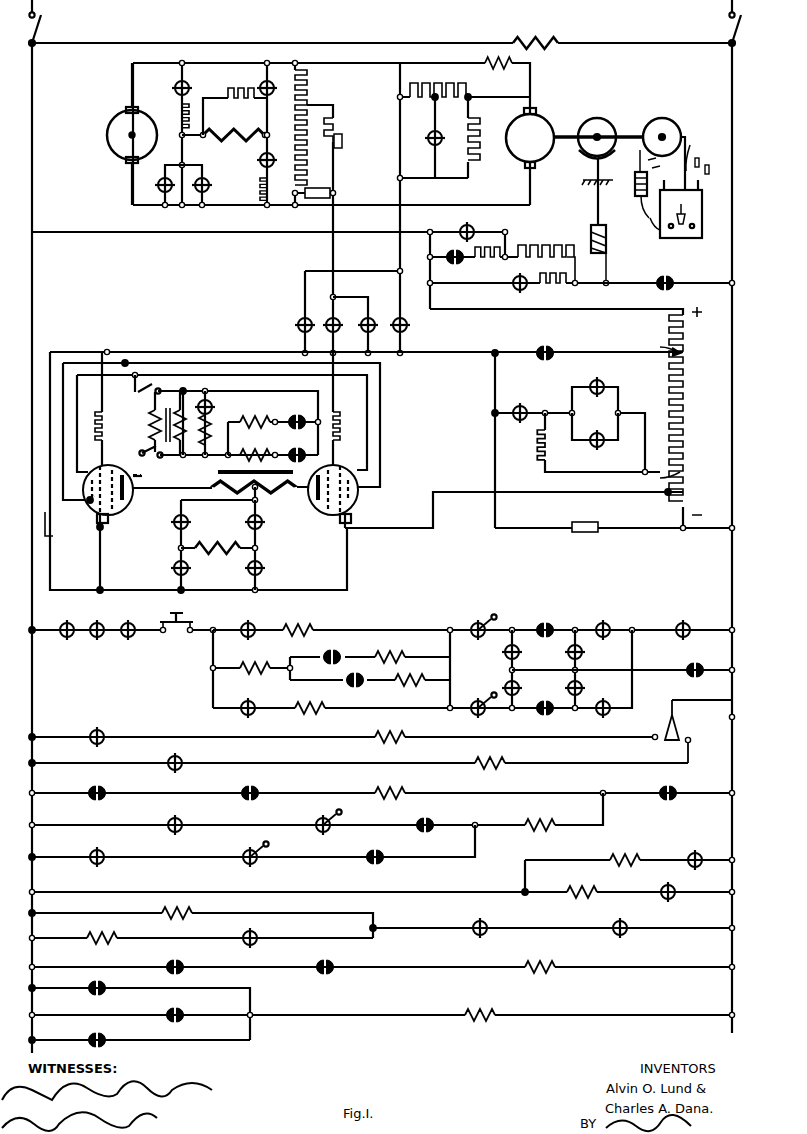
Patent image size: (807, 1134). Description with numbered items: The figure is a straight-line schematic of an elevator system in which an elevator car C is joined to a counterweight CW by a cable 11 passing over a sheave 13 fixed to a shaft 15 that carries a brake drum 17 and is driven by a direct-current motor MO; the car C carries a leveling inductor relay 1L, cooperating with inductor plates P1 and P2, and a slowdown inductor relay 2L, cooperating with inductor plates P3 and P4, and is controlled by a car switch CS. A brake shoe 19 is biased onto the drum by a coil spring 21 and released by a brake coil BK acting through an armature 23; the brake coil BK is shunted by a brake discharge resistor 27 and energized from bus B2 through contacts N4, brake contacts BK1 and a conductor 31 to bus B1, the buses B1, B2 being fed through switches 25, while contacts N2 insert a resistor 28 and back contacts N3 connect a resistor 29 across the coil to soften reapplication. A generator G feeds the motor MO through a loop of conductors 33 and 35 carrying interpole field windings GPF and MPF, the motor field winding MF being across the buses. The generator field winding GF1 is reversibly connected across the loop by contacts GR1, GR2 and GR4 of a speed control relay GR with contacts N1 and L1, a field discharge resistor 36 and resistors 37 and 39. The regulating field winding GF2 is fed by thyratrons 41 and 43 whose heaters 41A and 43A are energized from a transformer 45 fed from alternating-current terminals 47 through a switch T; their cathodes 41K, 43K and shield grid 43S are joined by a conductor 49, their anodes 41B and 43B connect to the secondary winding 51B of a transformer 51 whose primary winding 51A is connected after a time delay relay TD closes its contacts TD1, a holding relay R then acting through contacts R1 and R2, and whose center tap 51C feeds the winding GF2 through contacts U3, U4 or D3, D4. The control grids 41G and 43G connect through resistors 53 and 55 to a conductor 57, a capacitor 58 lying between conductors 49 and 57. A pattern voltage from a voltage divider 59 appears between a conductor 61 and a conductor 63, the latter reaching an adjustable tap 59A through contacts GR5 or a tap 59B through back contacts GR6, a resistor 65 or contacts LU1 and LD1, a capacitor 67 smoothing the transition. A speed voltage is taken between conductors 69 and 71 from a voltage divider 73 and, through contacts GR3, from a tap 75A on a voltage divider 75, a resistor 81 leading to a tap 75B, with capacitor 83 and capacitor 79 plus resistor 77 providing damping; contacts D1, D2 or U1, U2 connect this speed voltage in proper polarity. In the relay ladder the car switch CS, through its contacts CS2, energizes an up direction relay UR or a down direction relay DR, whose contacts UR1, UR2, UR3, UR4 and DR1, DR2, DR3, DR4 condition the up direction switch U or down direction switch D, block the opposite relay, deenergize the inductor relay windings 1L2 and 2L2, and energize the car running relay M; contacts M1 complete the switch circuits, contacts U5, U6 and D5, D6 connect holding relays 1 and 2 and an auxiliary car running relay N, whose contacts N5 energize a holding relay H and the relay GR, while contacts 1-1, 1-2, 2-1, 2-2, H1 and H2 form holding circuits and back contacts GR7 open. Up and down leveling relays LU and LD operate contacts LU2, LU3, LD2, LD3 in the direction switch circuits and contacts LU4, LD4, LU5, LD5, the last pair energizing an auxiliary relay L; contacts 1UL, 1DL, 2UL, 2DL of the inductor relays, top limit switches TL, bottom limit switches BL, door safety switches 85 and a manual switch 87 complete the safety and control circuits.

The switches 25 is at (44, 28).
The bus B1 is at (32, 137).
The bus B2 is at (732, 149).
The conductor 31 is at (245, 233).
The conductor 33 is at (380, 64).
The conductor 35 is at (376, 196).
The field discharge resistor 36 is at (224, 93).
The resistor 37 is at (178, 116).
The resistor 39 is at (263, 196).
The voltage divider 73 is at (307, 88).
The resistor 77 is at (342, 128).
The capacitor 79 is at (314, 200).
The capacitor 83 is at (400, 148).
The voltage divider 75 is at (465, 82).
The adjustable tap 75A is at (432, 137).
The tap 75B is at (483, 105).
The resistor 81 is at (483, 137).
The motor field winding MF is at (552, 28).
The generator interpole field winding GPF is at (483, 59).
The motor interpole field winding MPF is at (521, 74).
The generator G is at (122, 156).
The direct-current elevator motor MO is at (540, 122).
The shaft 15 is at (630, 134).
The brake drum 17 is at (603, 110).
The sheave 13 is at (678, 112).
The rope or cable 11 is at (697, 144).
The brake shoe 19 is at (582, 156).
The coil spring 21 is at (580, 170).
The magnetic armature 23 is at (608, 228).
The brake coil BK is at (598, 256).
The brake contacts BK1 is at (464, 228).
The brake discharge resistor 27 is at (554, 250).
The resistor 28 is at (553, 289).
The resistor 29 is at (487, 247).
The contacts of auxiliary car running relay N2 is at (472, 252).
The back contacts of auxiliary car running relay N3 is at (580, 289).
The contacts of auxiliary car running relay N4 is at (672, 280).
The voltage divider 59 is at (686, 386).
The adjustable tap 59A is at (649, 344).
The adjustable tap 59B is at (652, 480).
The conductor 61 is at (470, 492).
The conductor 63 is at (471, 353).
The resistor 65 is at (545, 446).
The capacitor 67 is at (572, 532).
The conductor 69 is at (336, 271).
The conductor 71 is at (398, 244).
The conductor 57 is at (204, 337).
The capacitor 58 is at (60, 530).
The resistor 53 is at (98, 415).
The resistor 55 is at (342, 416).
The transformer 45 is at (156, 398).
The terminals 47 is at (157, 425).
The grid-controlled rectifier tube 41 is at (122, 490).
The heater 41A is at (78, 500).
The anode 41B is at (135, 498).
The control grid 41G is at (93, 457).
The cathode 41K is at (114, 552).
The grid-controlled rectifier tube 43 is at (352, 516).
The heater 43A is at (382, 490).
The anode 43B is at (312, 524).
The control grid 43G is at (337, 470).
The cathode 43K is at (348, 536).
The shield grid 43S is at (112, 514).
The conductor 49 is at (328, 588).
The transformer 51 is at (230, 472).
The primary winding 51A is at (270, 450).
The secondary winding 51B is at (259, 491).
The center tap 51C is at (250, 502).
The door safety switches 85 is at (120, 622).
The manually operable switch 87 is at (184, 634).
The up relay coil U1 is at (300, 316).
The contacts of down direction switch D1 is at (338, 308).
The up relay coil U2 is at (372, 314).
The contacts of down direction switch D2 is at (406, 325).
The contacts of up direction switch U3 is at (176, 523).
The contacts of down direction switch D3 is at (262, 520).
The contacts of down direction switch D4 is at (176, 568).
The contacts of up direction switch U4 is at (262, 566).
The generator field winding GF1 is at (262, 122).
The generator field winding GF2 is at (230, 544).
The contacts of speed control relay GR1 is at (176, 90).
The contacts of speed control relay GR2 is at (264, 82).
The front contacts of speed control relay GR3 is at (423, 137).
The contacts of speed control relay GR4 is at (258, 155).
The front contacts of speed control relay GR5 is at (522, 346).
The back contacts of speed control relay GR6 is at (505, 408).
The back contacts of speed control relay GR7 is at (256, 934).
The speed control relay GR is at (566, 812).
The contacts of auxiliary car running relay N1 is at (160, 183).
The back contacts of auxiliary relay L1 is at (210, 186).
The auxiliary car running relay N is at (254, 662).
The contacts of auxiliary car running relay N5 is at (674, 792).
The back contacts of holding relay R1 is at (206, 423).
The holding relay R is at (250, 404).
The contacts of holding relay R2 is at (280, 412).
The time delay relay TD is at (230, 469).
The contacts of time delay relay TD1 is at (310, 438).
The transformer T is at (129, 393).
The contacts of up leveling relay LU1 is at (599, 381).
The contacts of down leveling relay LD1 is at (586, 447).
The contacts of up leveling relay LU2 is at (538, 622).
The contacts of down leveling relay LD2 is at (606, 624).
The contacts of up leveling relay LU3 is at (606, 712).
The contacts of down leveling relay LD3 is at (550, 712).
The contacts of up leveling relay LU4 is at (102, 788).
The contacts of down leveling relay LD4 is at (254, 788).
The contacts of up leveling relay LU5 is at (180, 963).
The contacts of down leveling relay LD5 is at (332, 963).
The up leveling relay LU is at (614, 858).
The down leveling relay LD is at (584, 886).
The contacts of leveling inductor relay 1UL is at (684, 858).
The contacts of leveling inductor relay 1DL is at (678, 886).
The contacts of slowdown inductor relay 2UL is at (180, 820).
The contacts of slowdown inductor relay 2DL is at (102, 853).
The top limit switch TL is at (470, 626).
The bottom limit switch BL is at (427, 739).
The front contacts of up direction relay UR1 is at (514, 652).
The front contacts of down direction relay DR1 is at (516, 686).
The up direction relay UR is at (386, 732).
The down direction relay DR is at (488, 758).
The back contacts of up direction relay UR2 is at (180, 760).
The contacts of down direction relay DR2 is at (102, 732).
The back contacts of up direction relay UR3 is at (484, 924).
The back contacts of down direction relay DR3 is at (624, 924).
The front contacts of up direction relay UR4 is at (184, 1010).
The contacts of down direction relay DR4 is at (104, 1038).
The front contacts of holding relay 1 1-1 is at (578, 652).
The contacts of holding relay 2 2-1 is at (578, 686).
The contacts of holding relay 1 1-2 is at (430, 824).
The front contacts of holding relay 2 2-2 is at (382, 856).
The holding relay 1 is at (388, 654).
The holding relay 2 is at (424, 678).
The up direction switch U is at (292, 622).
The down direction switch D is at (306, 704).
The contacts of down direction switch D5 is at (238, 623).
The front contacts of up direction switch U5 is at (338, 651).
The up relay coil U6 is at (254, 701).
The contacts of down direction switch D6 is at (362, 684).
The holding relay H is at (388, 790).
The back contacts of holding relay H1 is at (692, 616).
The contacts of holding relay H2 is at (104, 986).
The car running relay M is at (494, 1010).
The contacts of car running relay M1 is at (716, 650).
The auxiliary relay L is at (540, 962).
The leveling inductor relay 1L is at (699, 181).
The slowdown inductor relay 2L is at (647, 230).
The resistor 2L 2L2 is at (182, 905).
The resistor 1L 1L2 is at (112, 934).
The inductor plate P1 is at (702, 151).
The inductor plate P2 is at (714, 160).
The inductor plate P3 is at (641, 159).
The inductor plate P4 is at (644, 168).
The counterweight CW is at (644, 208).
The elevator car C is at (702, 207).
The car switch CS is at (682, 249).
The controller switch CS2 is at (680, 730).